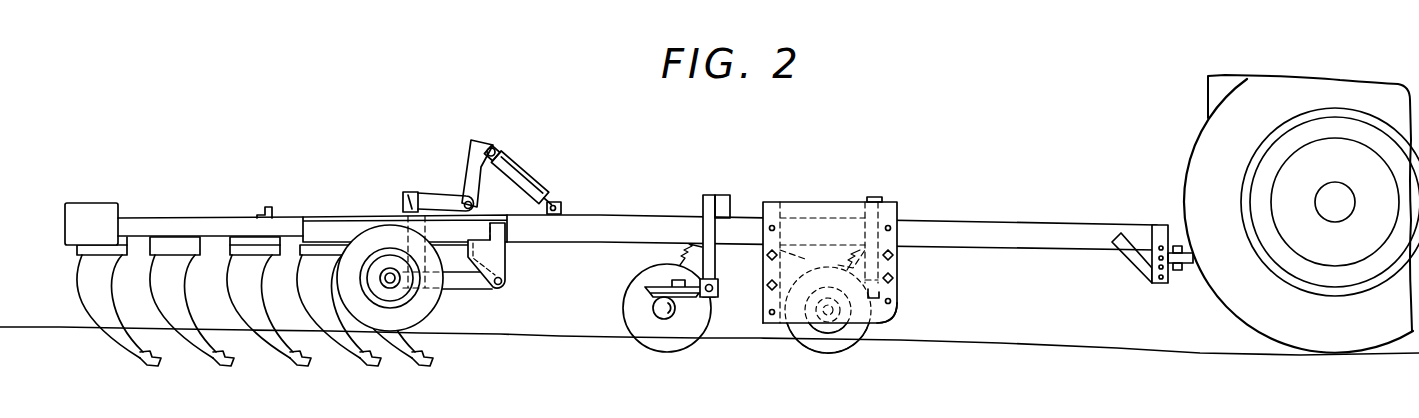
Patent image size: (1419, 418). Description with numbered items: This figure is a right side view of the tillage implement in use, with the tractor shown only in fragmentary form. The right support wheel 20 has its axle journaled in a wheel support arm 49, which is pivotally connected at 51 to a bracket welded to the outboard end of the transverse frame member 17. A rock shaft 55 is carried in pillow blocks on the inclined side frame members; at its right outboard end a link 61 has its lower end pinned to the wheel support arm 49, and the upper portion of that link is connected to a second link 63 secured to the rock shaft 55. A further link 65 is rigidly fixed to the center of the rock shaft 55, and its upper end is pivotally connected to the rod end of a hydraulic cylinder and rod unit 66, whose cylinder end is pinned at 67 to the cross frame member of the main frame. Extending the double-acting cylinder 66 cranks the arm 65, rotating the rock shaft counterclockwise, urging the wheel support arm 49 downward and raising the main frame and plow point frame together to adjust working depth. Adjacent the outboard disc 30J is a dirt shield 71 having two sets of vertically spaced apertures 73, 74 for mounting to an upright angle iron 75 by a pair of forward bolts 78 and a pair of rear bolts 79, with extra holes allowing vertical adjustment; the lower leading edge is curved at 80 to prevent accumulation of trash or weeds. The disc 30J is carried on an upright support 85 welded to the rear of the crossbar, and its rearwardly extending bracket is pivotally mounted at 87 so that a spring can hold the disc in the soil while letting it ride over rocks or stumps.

The transverse frame member 17 is at (505, 262).
The support wheel 20 is at (422, 320).
The disc 30J is at (829, 354).
The wheel support arm 49 is at (478, 293).
The pivotal connection 51 is at (504, 287).
The rock shaft 55 is at (479, 206).
The second link 61 is at (400, 216).
The second link 63 is at (432, 192).
The link 65 is at (470, 157).
The hydraulic cylinder and rod unit 66 is at (531, 156).
The pin connection 67 is at (556, 201).
The dirt shield 71 is at (832, 206).
The set of vertically spaced apertures 73 is at (772, 210).
The set of vertically spaced apertures 74 is at (894, 212).
The upright angle iron 75 is at (822, 257).
The forward bolts 78 is at (893, 257).
The rear bolts 79 is at (768, 285).
The curved portion 80 is at (884, 309).
The upright support 85 is at (874, 197).
The pivotal mounting 87 is at (892, 291).